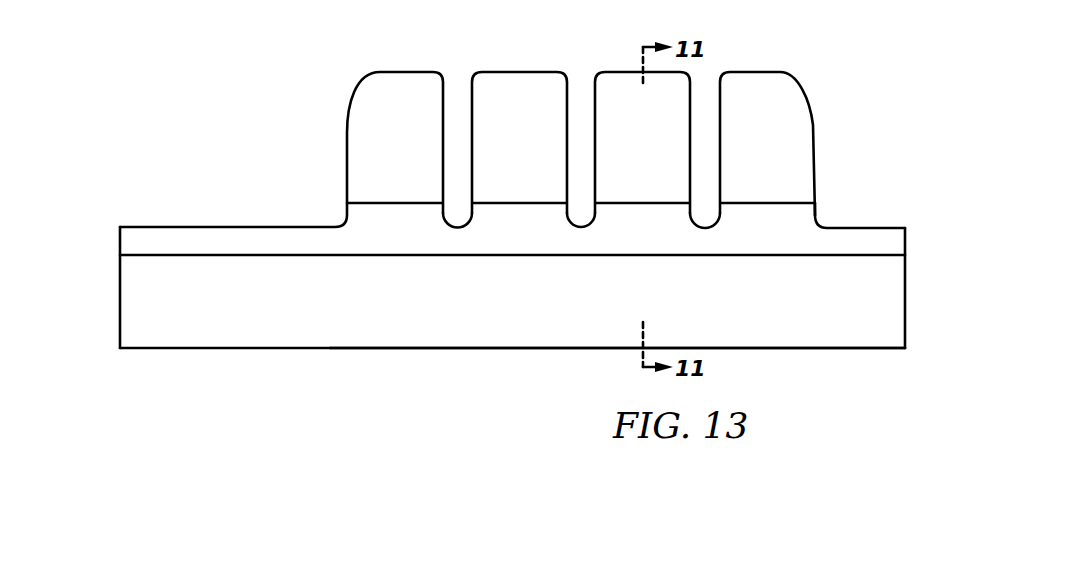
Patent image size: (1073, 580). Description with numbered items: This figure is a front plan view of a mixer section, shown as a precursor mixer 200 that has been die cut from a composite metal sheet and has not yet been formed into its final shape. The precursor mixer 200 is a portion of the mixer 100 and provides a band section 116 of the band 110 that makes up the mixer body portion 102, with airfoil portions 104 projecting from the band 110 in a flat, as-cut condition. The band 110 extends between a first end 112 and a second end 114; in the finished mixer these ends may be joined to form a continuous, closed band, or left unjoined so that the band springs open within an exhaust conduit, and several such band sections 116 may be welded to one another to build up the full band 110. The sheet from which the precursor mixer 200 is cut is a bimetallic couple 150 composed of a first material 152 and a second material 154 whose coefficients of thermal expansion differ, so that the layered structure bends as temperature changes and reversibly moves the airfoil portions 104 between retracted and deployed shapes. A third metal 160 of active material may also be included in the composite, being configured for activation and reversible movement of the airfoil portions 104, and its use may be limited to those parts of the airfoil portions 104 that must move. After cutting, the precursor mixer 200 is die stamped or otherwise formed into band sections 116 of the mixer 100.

The mixer 100 is at (805, 91).
The mixer body portion 102 is at (222, 313).
The airfoil portions 104 is at (405, 104).
The band 110 is at (302, 333).
The first end 112 is at (120, 292).
The second end 114 is at (905, 300).
The band sections 116 is at (905, 238).
The bimetallic couple 150 is at (812, 113).
The first material 152 is at (365, 327).
The second material 154 is at (360, 155).
The third metal 160 is at (279, 226).
The precursor mixer 200 is at (832, 197).